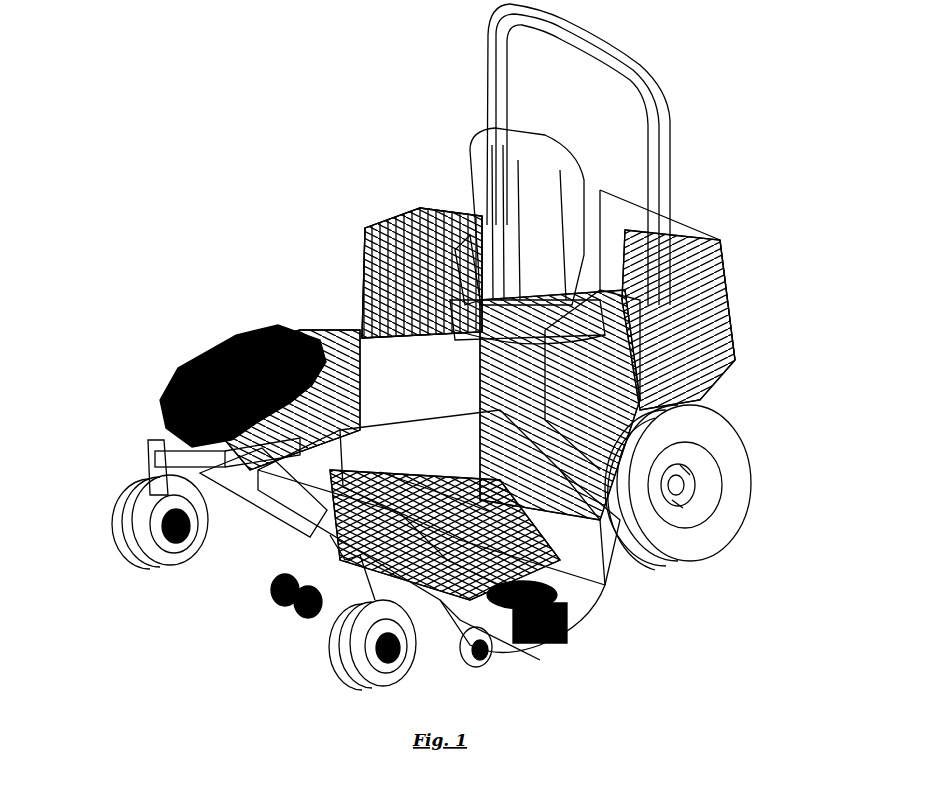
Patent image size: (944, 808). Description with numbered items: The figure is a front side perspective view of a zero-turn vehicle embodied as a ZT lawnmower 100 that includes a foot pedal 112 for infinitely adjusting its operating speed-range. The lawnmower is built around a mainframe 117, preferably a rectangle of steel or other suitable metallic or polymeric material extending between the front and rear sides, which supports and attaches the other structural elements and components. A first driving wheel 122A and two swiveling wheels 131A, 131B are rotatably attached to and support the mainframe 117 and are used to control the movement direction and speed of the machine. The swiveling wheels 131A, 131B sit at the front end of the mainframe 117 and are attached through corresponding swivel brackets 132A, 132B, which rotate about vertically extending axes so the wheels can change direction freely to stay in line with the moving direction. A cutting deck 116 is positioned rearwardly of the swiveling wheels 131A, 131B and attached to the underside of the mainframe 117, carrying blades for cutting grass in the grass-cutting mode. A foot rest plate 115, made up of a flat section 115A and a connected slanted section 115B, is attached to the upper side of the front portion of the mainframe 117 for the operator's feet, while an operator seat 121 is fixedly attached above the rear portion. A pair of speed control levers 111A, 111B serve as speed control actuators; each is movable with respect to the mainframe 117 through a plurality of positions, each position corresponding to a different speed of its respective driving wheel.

The ZT lawnmower 100 is at (716, 178).
The speed control lever 111A is at (487, 287).
The speed control lever 111B is at (423, 250).
The foot pedal 112 is at (343, 463).
The foot rest plate 115 is at (493, 523).
The flat section 115A is at (380, 443).
The slanted section 115B is at (343, 487).
The cutting deck 116 is at (587, 555).
The mainframe 117 is at (490, 497).
The operator seat 121 is at (540, 225).
The first driving wheel 122A is at (735, 418).
The swiveling wheel 131A is at (325, 655).
The swiveling wheel 131B is at (124, 512).
The swivel bracket 132A is at (353, 575).
The swivel bracket 132B is at (146, 464).